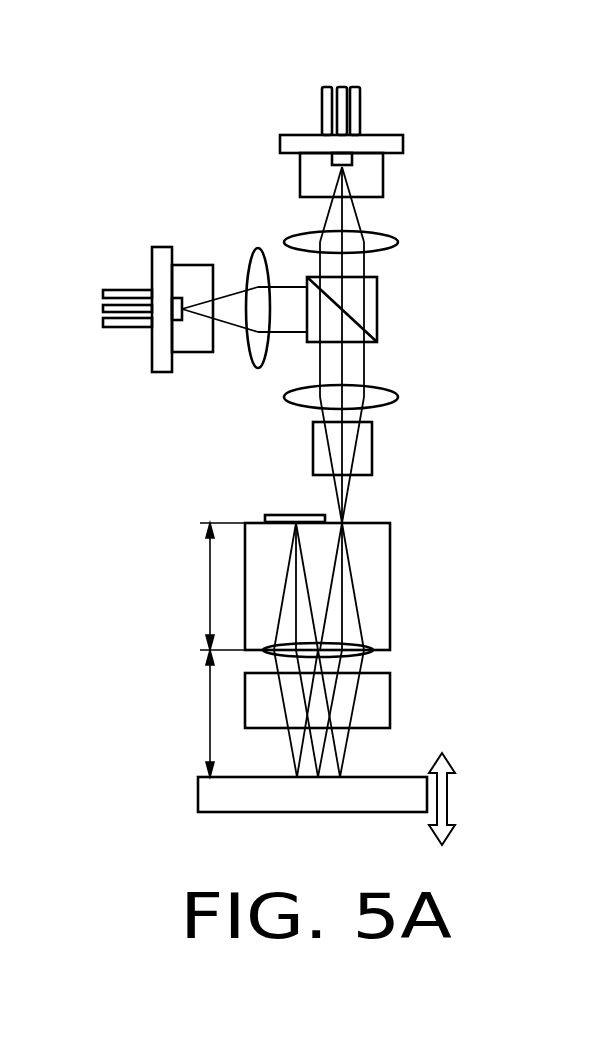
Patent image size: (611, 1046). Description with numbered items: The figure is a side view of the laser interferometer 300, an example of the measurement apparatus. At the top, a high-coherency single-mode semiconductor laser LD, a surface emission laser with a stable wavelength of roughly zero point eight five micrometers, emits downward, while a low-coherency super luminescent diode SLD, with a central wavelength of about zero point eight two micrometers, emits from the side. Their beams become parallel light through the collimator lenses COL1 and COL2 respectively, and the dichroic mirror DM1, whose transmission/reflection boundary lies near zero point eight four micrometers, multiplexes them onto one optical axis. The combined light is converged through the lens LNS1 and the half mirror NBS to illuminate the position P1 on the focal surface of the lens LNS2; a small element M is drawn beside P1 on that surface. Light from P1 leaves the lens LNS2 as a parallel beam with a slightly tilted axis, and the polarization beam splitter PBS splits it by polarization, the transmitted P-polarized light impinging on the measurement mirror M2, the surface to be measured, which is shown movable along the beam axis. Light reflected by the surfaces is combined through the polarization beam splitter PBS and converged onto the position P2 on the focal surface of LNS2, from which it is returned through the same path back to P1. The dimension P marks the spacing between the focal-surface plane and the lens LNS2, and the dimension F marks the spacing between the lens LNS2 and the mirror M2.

The laser interferometer 300 is at (592, 122).
The semiconductor laser LD is at (383, 176).
The super luminescent diode SLD is at (152, 258).
The collimator lens COL1 is at (292, 238).
The collimator lens COL2 is at (255, 252).
The dichroic mirror DM1 is at (377, 282).
The lens LNS1 is at (286, 397).
The half mirror NBS is at (313, 441).
The mirror M is at (279, 515).
The position P1 is at (342, 523).
The position P2 is at (295, 524).
The polarization beam splitter PBS is at (245, 712).
The lens LNS2 is at (373, 650).
The measurement mirror M2 is at (407, 777).
The distance P is at (225, 586).
The focal length F is at (201, 713).